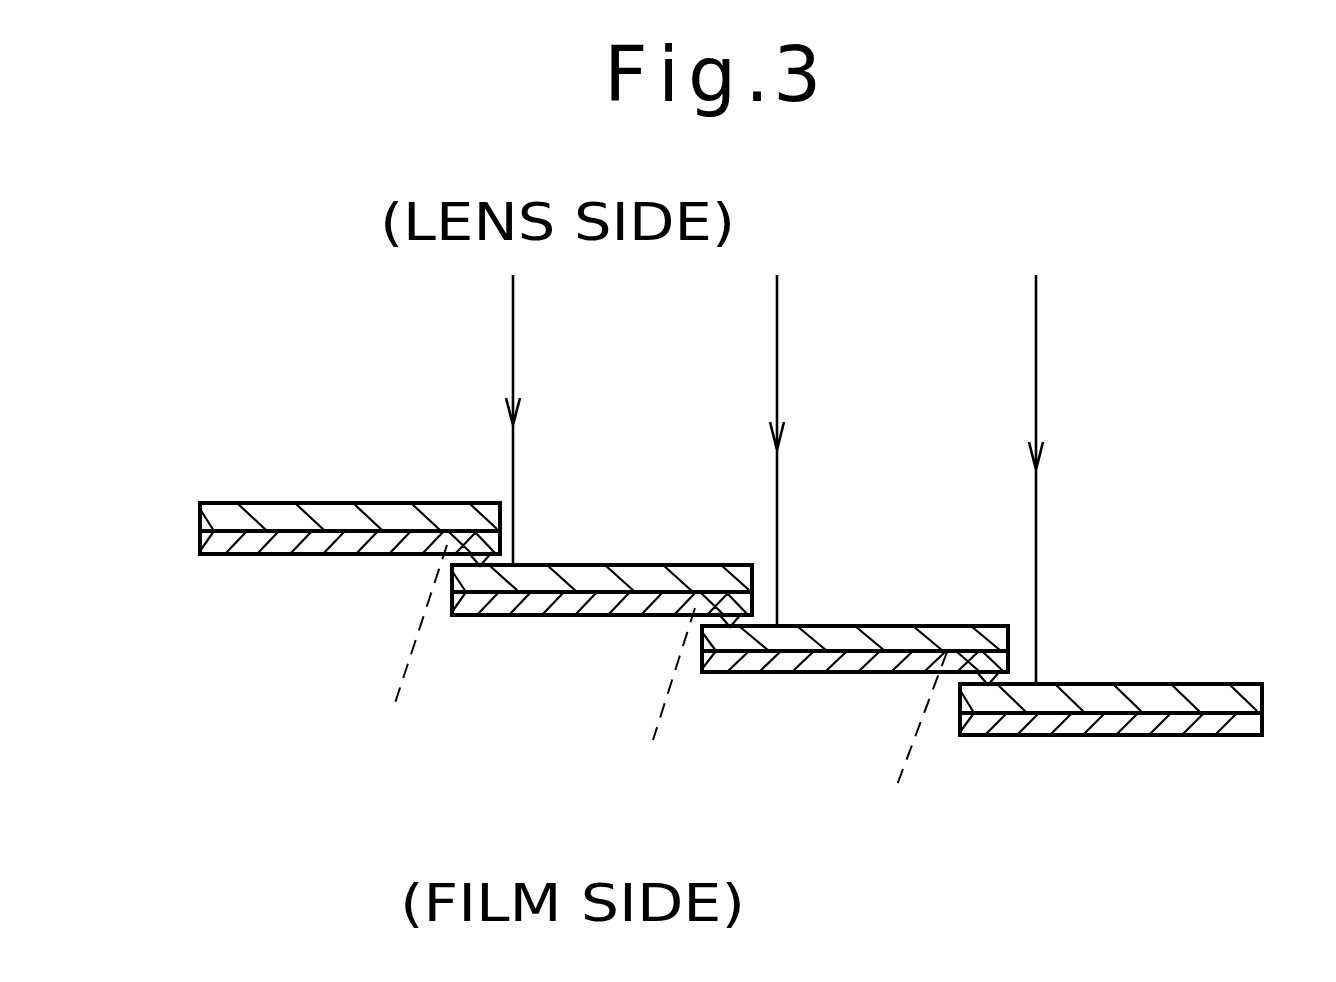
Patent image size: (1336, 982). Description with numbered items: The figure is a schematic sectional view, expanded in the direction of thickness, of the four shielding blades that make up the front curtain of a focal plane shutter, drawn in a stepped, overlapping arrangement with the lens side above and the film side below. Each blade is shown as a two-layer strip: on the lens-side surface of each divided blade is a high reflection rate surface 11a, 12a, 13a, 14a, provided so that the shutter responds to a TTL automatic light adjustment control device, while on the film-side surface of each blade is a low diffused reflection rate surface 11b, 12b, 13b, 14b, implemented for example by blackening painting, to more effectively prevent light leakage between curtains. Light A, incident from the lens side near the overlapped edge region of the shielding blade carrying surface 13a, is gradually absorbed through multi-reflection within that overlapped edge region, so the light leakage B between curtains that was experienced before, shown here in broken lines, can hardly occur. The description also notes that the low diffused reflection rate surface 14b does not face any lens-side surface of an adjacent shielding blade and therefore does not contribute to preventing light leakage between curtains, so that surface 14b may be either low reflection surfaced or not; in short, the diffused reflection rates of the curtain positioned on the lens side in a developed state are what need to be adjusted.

The high reflection rate surface 11a is at (387, 505).
The low diffused reflection rate surface 11b is at (320, 552).
The high reflection rate surface 12a is at (612, 578).
The low diffused reflection rate surface 12b is at (538, 608).
The high reflection rate surface 13a is at (885, 628).
The low diffused reflection rate surface 13b is at (850, 660).
The high reflection rate surface 14a is at (1125, 700).
The low diffused reflection rate surface 14b is at (1010, 735).
The light A is at (777, 390).
The light leakage B is at (663, 703).